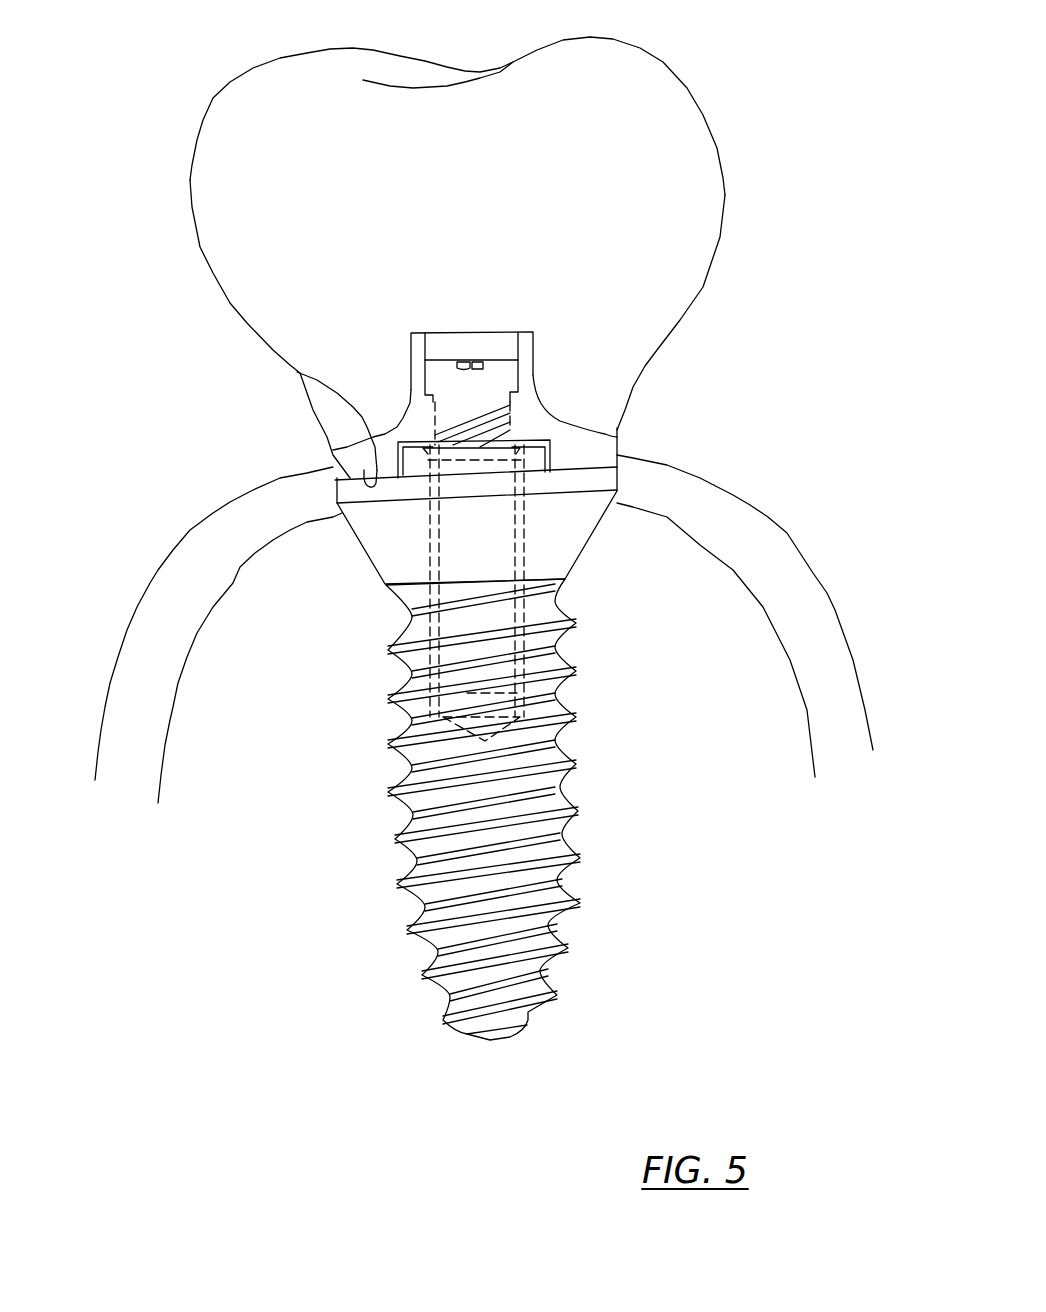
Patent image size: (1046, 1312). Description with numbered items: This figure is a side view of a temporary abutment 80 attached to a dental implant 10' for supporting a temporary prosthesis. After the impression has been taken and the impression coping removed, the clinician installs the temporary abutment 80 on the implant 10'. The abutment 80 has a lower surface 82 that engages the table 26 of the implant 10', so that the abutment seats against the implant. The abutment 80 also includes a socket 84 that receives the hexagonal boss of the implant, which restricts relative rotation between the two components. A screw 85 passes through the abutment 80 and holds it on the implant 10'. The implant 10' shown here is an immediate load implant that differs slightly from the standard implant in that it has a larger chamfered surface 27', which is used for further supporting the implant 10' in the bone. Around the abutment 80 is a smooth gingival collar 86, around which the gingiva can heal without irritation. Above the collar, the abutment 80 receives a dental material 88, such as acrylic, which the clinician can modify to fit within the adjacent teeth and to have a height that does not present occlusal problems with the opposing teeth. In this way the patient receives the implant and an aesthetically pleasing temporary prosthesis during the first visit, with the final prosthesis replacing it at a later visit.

The temporary abutment 80 is at (802, 177).
The dental material 88 is at (190, 180).
The lower surface 82 is at (297, 372).
The table 26 is at (333, 448).
The screw 85 is at (503, 377).
The socket 84 is at (617, 437).
The smooth gingival collar 86 is at (617, 447).
The chamfered surface 27' is at (464, 629).
The implant 10' is at (638, 774).